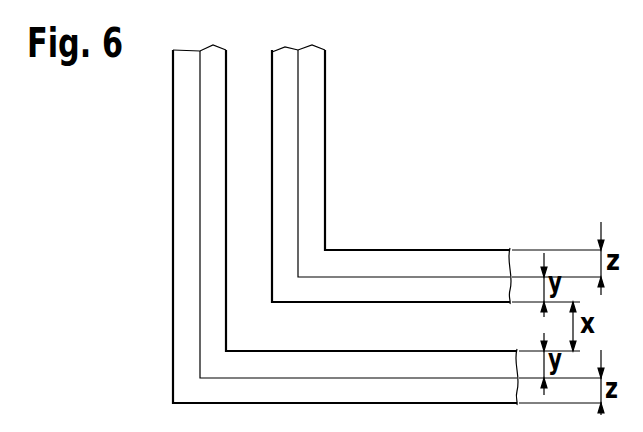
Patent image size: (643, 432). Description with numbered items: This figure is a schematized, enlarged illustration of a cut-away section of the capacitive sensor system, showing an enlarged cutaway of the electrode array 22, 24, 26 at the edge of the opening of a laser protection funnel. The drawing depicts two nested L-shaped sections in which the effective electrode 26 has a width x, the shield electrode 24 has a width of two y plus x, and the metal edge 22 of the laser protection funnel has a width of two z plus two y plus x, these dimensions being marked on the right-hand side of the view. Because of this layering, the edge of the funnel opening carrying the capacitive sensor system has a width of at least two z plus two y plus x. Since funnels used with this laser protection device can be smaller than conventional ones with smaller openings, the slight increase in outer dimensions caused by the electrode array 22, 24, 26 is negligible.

The metal edge 22 is at (187, 183).
The shield electrode 24 is at (218, 133).
The effective electrode 26 is at (247, 190).